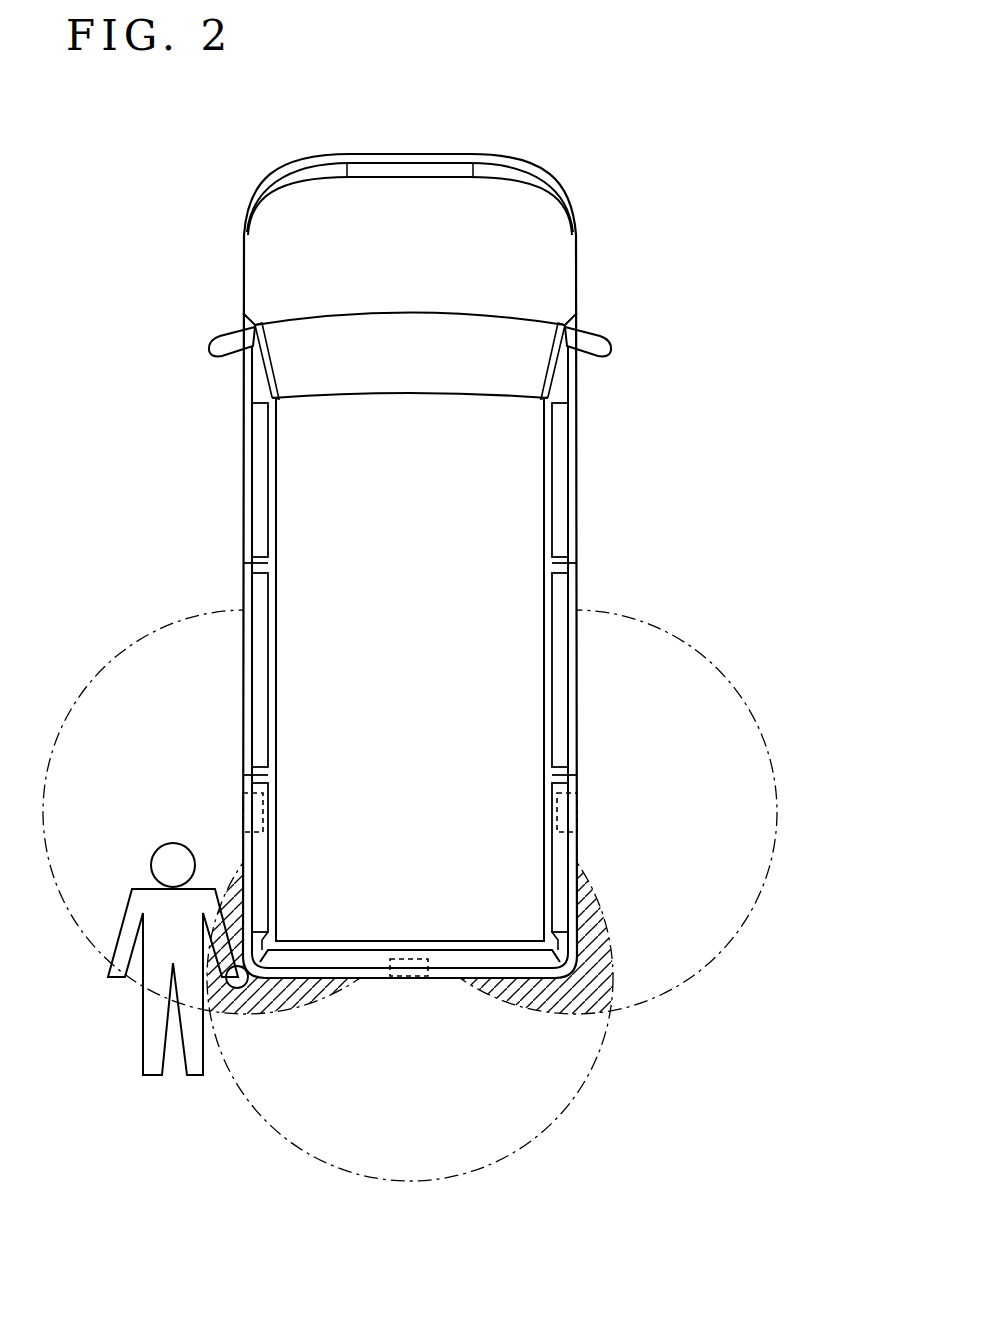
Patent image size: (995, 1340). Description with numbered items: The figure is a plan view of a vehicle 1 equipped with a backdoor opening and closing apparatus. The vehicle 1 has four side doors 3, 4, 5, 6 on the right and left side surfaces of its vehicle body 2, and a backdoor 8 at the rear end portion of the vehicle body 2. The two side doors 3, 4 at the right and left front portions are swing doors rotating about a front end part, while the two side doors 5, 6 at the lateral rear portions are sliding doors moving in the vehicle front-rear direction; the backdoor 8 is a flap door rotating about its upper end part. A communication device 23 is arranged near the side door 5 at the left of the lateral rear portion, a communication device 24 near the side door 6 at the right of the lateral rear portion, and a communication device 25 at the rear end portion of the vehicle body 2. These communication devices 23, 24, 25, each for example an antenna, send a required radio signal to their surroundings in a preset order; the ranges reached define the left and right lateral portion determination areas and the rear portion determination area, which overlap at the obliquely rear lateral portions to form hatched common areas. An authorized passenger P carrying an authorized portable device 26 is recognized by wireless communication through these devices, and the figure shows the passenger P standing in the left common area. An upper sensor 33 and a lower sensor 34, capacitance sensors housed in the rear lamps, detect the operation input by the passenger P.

The vehicle 1 is at (186, 150).
The vehicle body 2 is at (297, 527).
The side door 3 is at (243, 460).
The side door 4 is at (577, 460).
The side door 5 is at (247, 680).
The side door 6 is at (573, 680).
The backdoor 8 is at (366, 966).
The communication device 23 is at (243, 815).
The communication device 24 is at (577, 815).
The communication device 25 is at (406, 976).
The portable device 26 is at (240, 989).
The upper sensor 33 is at (263, 948).
The lower sensor 34 is at (557, 948).
The authorized passenger P is at (133, 889).